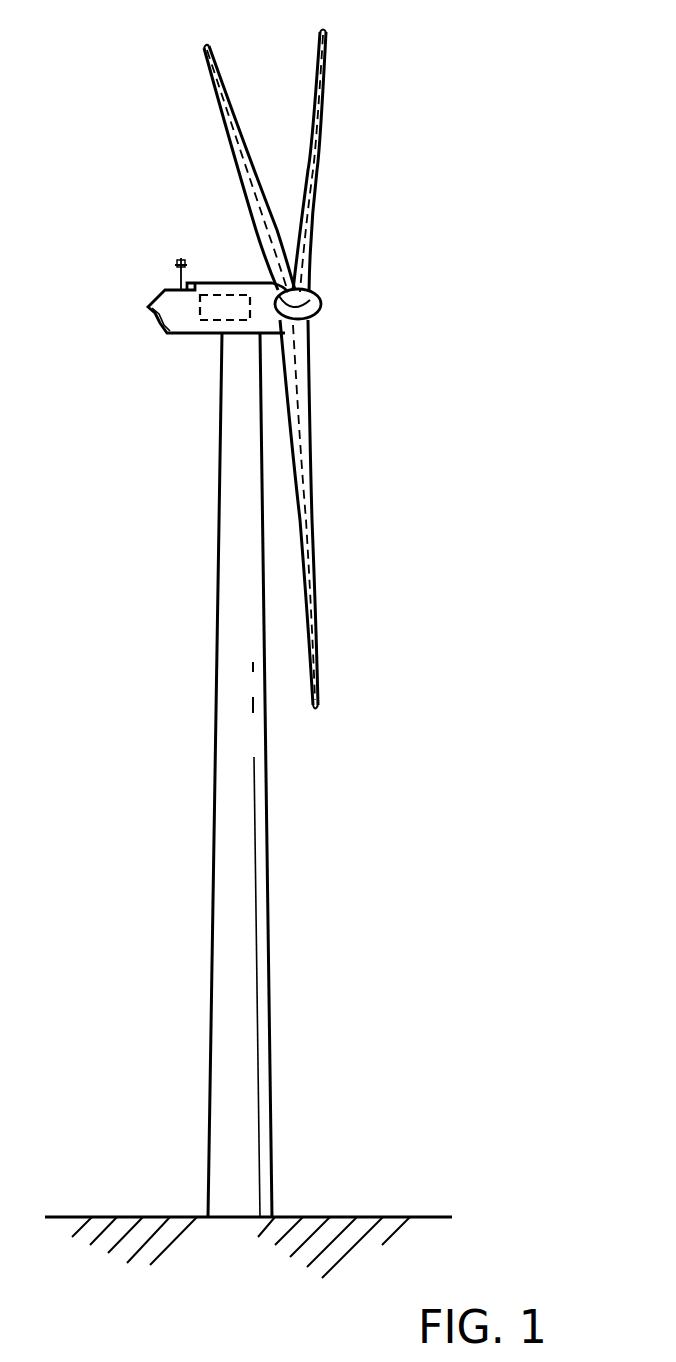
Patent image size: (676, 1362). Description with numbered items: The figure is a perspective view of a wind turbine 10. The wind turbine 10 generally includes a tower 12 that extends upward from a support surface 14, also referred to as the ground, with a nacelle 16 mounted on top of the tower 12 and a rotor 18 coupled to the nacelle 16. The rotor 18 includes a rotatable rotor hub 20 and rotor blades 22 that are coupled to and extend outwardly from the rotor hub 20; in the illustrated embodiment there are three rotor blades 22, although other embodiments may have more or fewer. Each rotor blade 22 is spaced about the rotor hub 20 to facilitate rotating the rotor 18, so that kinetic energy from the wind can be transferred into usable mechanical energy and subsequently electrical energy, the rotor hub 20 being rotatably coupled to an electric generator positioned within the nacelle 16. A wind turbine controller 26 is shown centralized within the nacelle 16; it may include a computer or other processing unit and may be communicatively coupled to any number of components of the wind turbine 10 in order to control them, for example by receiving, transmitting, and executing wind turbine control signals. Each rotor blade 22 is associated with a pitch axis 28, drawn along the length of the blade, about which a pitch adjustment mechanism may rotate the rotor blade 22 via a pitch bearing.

The wind turbine 10 is at (455, 110).
The tower 12 is at (225, 895).
The support surface 14 is at (132, 1217).
The nacelle 16 is at (197, 333).
The rotor 18 is at (330, 276).
The rotor hub 20 is at (320, 312).
The rotor blade 22 is at (315, 77).
The wind turbine controller 26 is at (228, 295).
The pitch axis 28 is at (258, 207).